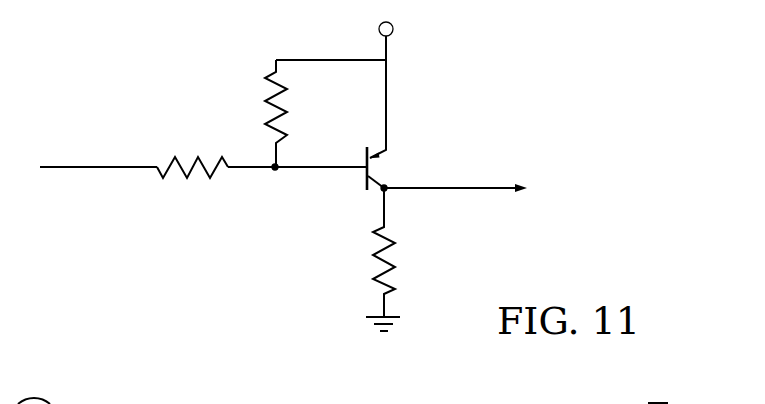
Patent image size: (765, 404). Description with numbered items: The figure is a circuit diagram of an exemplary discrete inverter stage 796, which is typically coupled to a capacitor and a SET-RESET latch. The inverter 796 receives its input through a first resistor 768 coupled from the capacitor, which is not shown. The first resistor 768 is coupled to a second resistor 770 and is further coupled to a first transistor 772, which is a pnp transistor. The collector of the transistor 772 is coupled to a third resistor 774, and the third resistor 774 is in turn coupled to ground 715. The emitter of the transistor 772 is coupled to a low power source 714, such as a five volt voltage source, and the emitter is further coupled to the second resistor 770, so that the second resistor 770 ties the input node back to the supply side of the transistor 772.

The low power source 714 is at (394, 28).
The ground 715 is at (372, 325).
The first resistor 768 is at (217, 164).
The second resistor 770 is at (272, 98).
The first transistor 772 is at (378, 181).
The third resistor 774 is at (380, 243).
The discrete inverter stage 796 is at (542, 68).